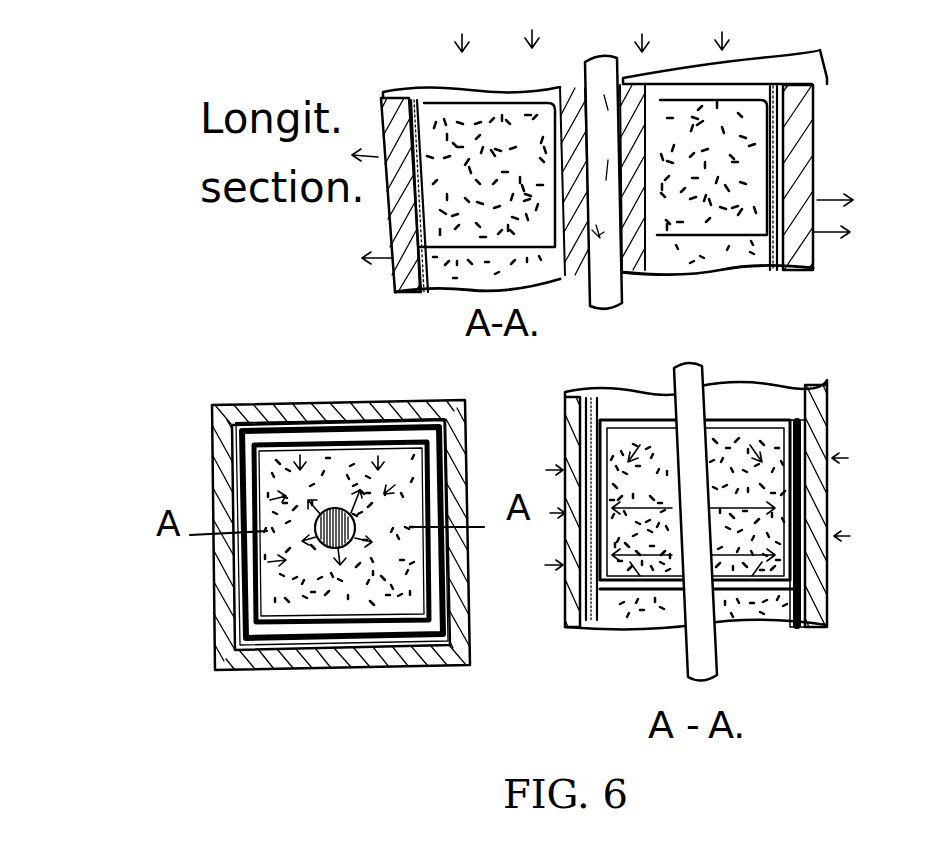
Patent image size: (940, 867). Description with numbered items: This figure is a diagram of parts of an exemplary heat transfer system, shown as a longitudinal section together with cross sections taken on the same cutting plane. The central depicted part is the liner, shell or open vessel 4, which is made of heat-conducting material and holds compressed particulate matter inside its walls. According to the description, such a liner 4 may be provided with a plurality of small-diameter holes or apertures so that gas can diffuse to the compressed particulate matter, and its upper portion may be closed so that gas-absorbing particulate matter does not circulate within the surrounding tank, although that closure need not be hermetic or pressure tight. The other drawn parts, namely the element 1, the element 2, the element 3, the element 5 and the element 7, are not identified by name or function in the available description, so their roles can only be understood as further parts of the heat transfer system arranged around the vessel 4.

The outer casing wall 1 is at (820, 200).
The tube 2 is at (712, 655).
The inner insulating layer 3 is at (442, 566).
The liner, shell or open vessel 4 is at (813, 109).
The cover plate 5 is at (350, 412).
The partition frame 7 is at (747, 417).